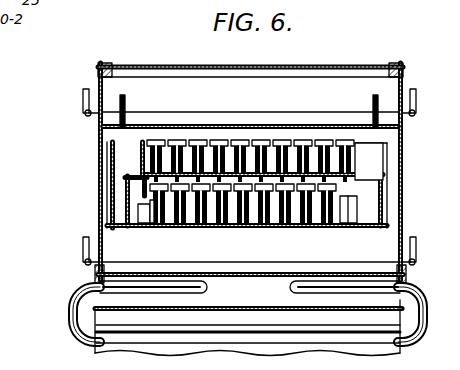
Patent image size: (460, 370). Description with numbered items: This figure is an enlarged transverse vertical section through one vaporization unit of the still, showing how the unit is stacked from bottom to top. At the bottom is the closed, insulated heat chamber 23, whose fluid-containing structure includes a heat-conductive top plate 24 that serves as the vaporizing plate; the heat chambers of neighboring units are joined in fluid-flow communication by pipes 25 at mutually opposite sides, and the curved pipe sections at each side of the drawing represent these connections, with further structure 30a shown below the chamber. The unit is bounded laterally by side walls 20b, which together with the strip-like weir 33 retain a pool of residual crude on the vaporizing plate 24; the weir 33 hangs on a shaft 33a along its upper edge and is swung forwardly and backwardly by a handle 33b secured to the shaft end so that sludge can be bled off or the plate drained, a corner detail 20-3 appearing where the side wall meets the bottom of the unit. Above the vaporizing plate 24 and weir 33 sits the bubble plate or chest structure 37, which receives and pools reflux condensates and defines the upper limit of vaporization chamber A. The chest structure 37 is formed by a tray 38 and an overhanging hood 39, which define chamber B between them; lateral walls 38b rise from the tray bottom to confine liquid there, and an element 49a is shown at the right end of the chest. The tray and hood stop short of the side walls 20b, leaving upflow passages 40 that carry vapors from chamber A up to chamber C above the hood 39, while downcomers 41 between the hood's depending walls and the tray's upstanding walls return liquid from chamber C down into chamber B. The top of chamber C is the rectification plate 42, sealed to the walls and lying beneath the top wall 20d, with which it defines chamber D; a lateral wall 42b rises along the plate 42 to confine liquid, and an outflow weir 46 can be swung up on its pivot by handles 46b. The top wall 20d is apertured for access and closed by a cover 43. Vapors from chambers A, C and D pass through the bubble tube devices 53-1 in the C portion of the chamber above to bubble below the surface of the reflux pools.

The side wall 20b is at (100, 163).
The cover 43 is at (285, 64).
The top wall 20d is at (375, 65).
The rectification plate 42 is at (250, 102).
The outflow weir 46 is at (272, 112).
The lateral wall 42b is at (120, 96).
The handle 46b is at (82, 108).
The hood 39 is at (132, 160).
The upflow passage 40 is at (107, 184).
The downcomer 41 is at (125, 206).
The bubble plate or chest structure 37 is at (378, 178).
The terminal block 49a is at (376, 168).
The bubble tube device 53-1 is at (200, 142).
The vaporizing plate or tray 38 is at (192, 230).
The lateral wall 38b is at (144, 229).
The weir 33 is at (282, 247).
The top plate (vaporizing plate) 24 is at (350, 271).
The bottom corner of housing 20-3 is at (96, 271).
The handle 33b is at (82, 248).
The shaft 33a is at (86, 262).
The pipe 25 is at (66, 305).
The heat chamber 23 is at (286, 284).
The base plate 30a is at (262, 305).